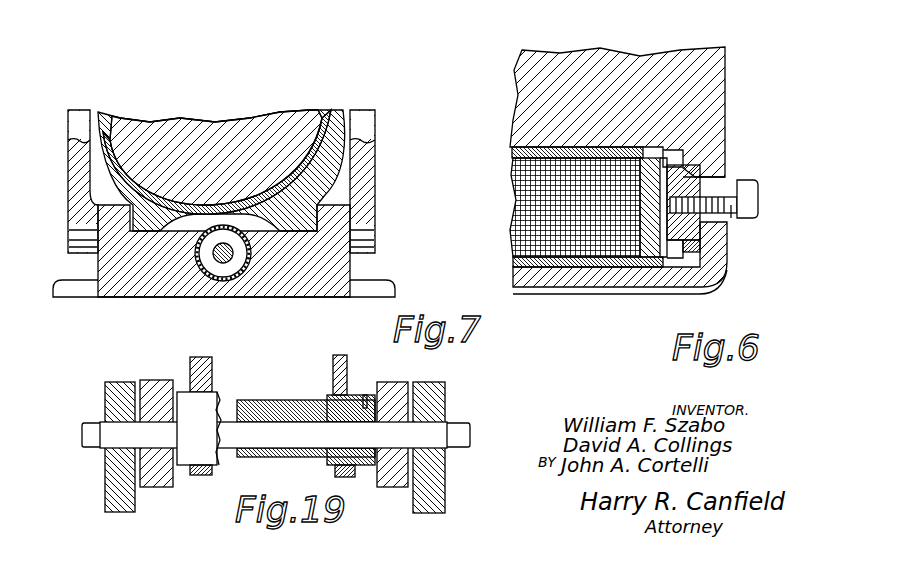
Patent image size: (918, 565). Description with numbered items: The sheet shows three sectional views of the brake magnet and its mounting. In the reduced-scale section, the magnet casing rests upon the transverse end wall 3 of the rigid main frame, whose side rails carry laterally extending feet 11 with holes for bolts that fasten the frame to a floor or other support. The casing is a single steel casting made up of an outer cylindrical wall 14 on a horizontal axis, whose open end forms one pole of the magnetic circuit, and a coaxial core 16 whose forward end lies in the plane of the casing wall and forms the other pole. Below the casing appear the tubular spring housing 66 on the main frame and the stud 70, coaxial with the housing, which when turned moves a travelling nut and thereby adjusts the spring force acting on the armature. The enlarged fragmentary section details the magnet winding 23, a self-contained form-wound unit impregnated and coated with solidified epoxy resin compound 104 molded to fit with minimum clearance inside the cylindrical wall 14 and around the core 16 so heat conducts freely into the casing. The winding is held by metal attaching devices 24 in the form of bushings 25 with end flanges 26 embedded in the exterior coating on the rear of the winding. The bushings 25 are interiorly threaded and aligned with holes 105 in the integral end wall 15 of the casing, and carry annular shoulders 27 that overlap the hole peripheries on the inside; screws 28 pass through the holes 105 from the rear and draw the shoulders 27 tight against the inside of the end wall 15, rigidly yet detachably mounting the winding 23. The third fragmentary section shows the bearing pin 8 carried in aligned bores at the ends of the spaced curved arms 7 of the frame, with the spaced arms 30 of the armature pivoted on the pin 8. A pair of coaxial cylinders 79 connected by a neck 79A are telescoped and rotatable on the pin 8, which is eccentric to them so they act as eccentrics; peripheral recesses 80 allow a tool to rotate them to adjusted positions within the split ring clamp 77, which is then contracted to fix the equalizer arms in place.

In FIG. 7, the transverse end wall 3 is at (308, 287).
In FIG. 7, the laterally extending feet 11 is at (60, 284).
In FIG. 7, the outer cylindrical wall 14 is at (322, 184).
In FIG. 6, the outer cylindrical wall 14 is at (513, 280).
In FIG. 7, the coaxial core 16 is at (222, 120).
In FIG. 6, the coaxial core 16 is at (510, 110).
In FIG. 7, the solidified epoxy resin compound 104 is at (326, 122).
In FIG. 6, the solidified epoxy resin compound 104 is at (510, 153).
In FIG. 7, the tubular spring housing 66 is at (203, 283).
In FIG. 7, the stud 70 is at (224, 262).
In FIG. 6, the magnet winding 23 is at (516, 206).
In FIG. 6, the end wall 15 is at (718, 162).
In FIG. 6, the annular shoulders 27 is at (727, 144).
In FIG. 6, the attaching devices 24 is at (690, 180).
In FIG. 6, the screws 28 is at (758, 202).
In FIG. 6, the holes 105 is at (740, 216).
In FIG. 6, the bushings 25 is at (700, 240).
In FIG. 6, the end flanges 26 is at (672, 250).
In FIG. 19, the spaced arms 30 is at (131, 384).
In FIG. 19, the curved arms 7 is at (158, 384).
In FIG. 19, the coaxial cylinders 79 is at (218, 395).
In FIG. 19, the neck 79A is at (268, 402).
In FIG. 19, the peripheral recesses 80 is at (182, 428).
In FIG. 19, the bearing pin 8 is at (292, 436).
In FIG. 19, the split ring clamp 77 is at (202, 476).